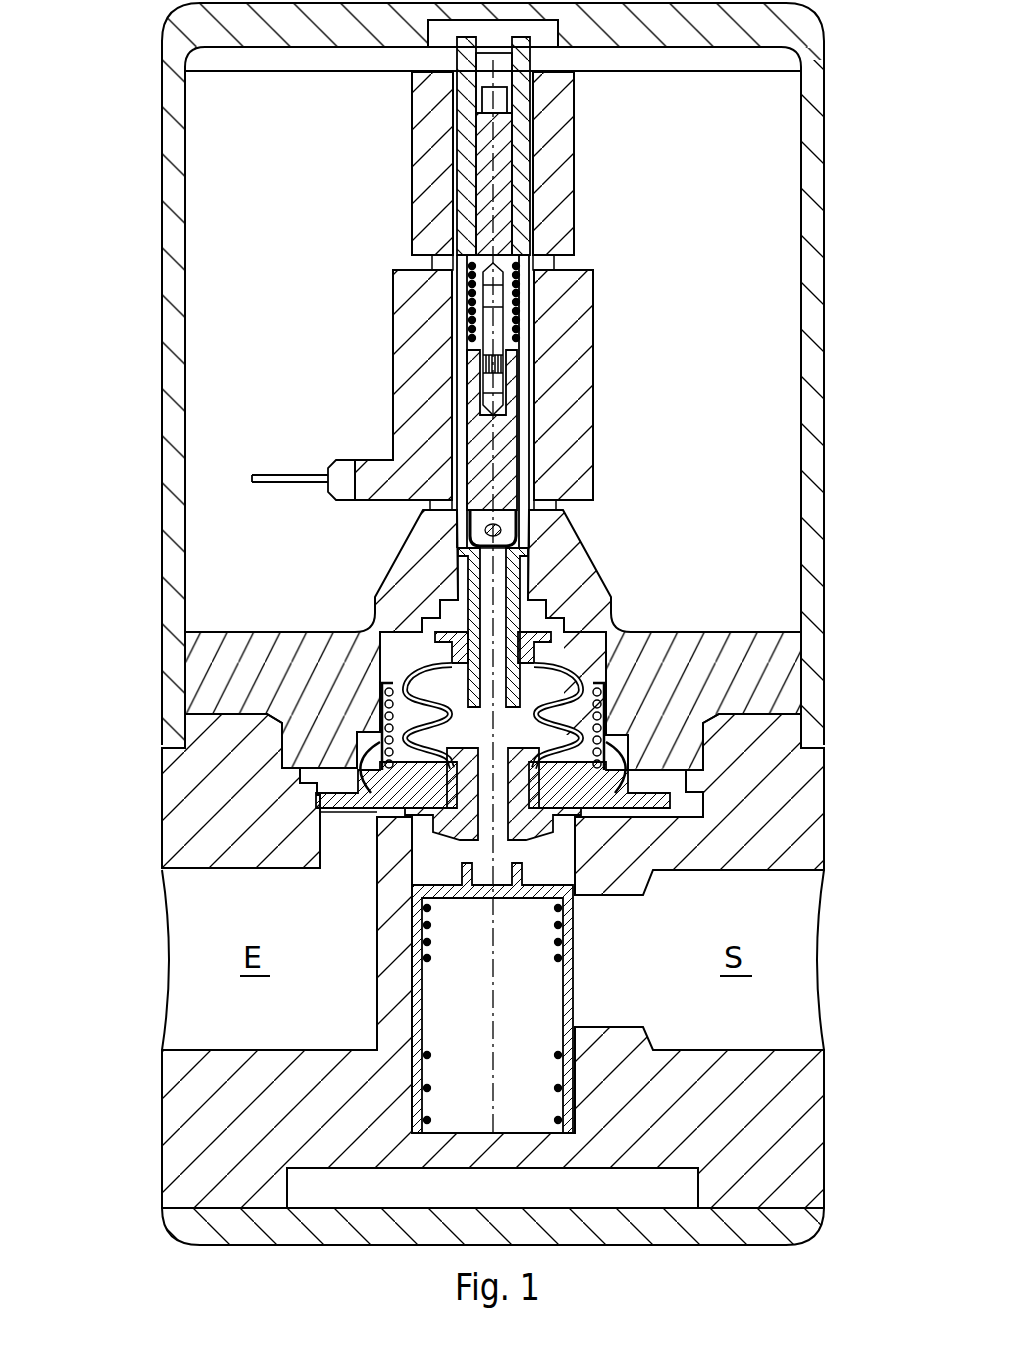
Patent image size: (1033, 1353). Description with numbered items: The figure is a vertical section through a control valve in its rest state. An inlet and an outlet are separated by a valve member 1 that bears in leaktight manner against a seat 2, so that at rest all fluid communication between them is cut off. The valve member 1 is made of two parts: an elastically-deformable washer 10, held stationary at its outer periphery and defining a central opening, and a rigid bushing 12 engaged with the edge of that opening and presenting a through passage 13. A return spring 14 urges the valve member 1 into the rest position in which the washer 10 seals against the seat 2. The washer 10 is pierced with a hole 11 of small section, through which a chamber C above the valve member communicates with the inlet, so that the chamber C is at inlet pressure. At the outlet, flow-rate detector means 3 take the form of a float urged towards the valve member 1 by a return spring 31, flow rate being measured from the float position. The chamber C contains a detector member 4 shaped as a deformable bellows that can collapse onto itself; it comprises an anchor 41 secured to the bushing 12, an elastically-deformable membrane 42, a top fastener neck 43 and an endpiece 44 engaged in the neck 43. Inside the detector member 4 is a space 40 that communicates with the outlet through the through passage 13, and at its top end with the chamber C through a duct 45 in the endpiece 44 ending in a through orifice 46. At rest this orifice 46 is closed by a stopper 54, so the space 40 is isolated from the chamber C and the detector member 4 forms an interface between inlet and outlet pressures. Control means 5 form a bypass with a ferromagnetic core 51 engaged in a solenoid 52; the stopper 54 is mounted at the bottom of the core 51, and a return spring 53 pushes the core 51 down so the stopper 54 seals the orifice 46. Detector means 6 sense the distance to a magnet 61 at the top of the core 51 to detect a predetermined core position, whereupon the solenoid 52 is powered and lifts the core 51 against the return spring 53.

The valve member 1 is at (493, 829).
The seat 2 is at (405, 817).
The flow-rate detector means 3 is at (465, 905).
The detector member 4 is at (575, 713).
The control means 5 is at (593, 248).
The detector means 6 is at (497, 45).
The elastically-deformable washer 10 is at (640, 820).
The hole 11 is at (380, 800).
The rigid bushing 12 is at (640, 765).
The through passage 13 is at (735, 870).
The return spring 14 is at (383, 722).
The return spring 31 is at (560, 1068).
The space 40 is at (443, 673).
The anchor 41 is at (602, 700).
The elastically-deformable membrane 42 is at (545, 657).
The top fastener neck 43 is at (548, 548).
The endpiece 44 is at (590, 556).
The duct 45 is at (487, 610).
The through orifice 46 is at (465, 557).
The core 51 is at (498, 450).
The solenoid 52 is at (562, 365).
The return spring 53 is at (522, 298).
The stopper 54 is at (575, 508).
The magnet 61 is at (493, 105).
The chamber C is at (615, 615).